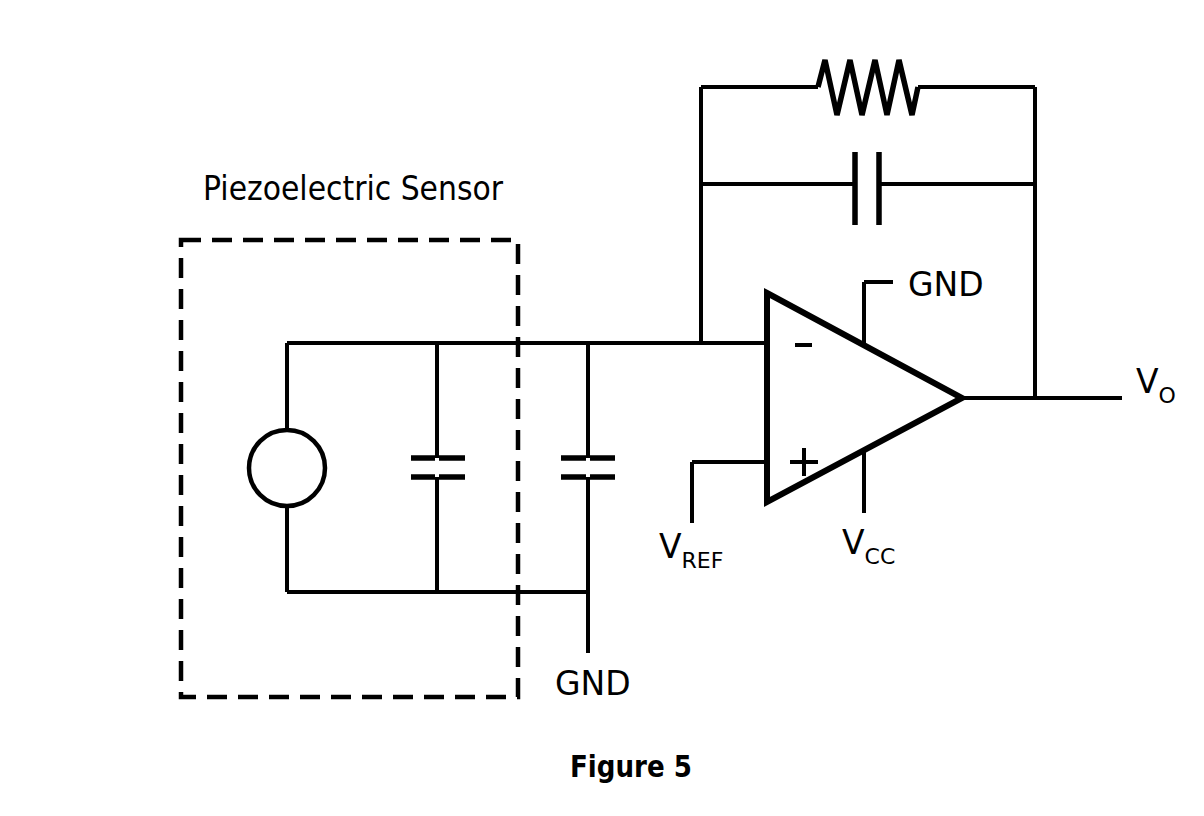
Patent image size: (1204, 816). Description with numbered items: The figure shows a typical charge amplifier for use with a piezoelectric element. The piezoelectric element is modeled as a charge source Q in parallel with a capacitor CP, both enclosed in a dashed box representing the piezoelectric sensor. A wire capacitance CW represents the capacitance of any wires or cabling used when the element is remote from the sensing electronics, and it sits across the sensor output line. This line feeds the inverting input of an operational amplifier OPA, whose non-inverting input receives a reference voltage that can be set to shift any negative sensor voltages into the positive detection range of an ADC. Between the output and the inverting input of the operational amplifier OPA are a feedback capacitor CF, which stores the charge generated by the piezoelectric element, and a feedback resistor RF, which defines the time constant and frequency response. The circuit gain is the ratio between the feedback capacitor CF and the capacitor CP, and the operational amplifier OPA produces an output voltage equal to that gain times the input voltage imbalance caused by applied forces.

The charge source Q is at (287, 468).
The capacitor CP is at (425, 450).
The wire capacitance CW is at (601, 441).
The feedback resistor RF is at (887, 74).
The feedback capacitor CF is at (840, 198).
The operational amplifier OPA is at (864, 397).